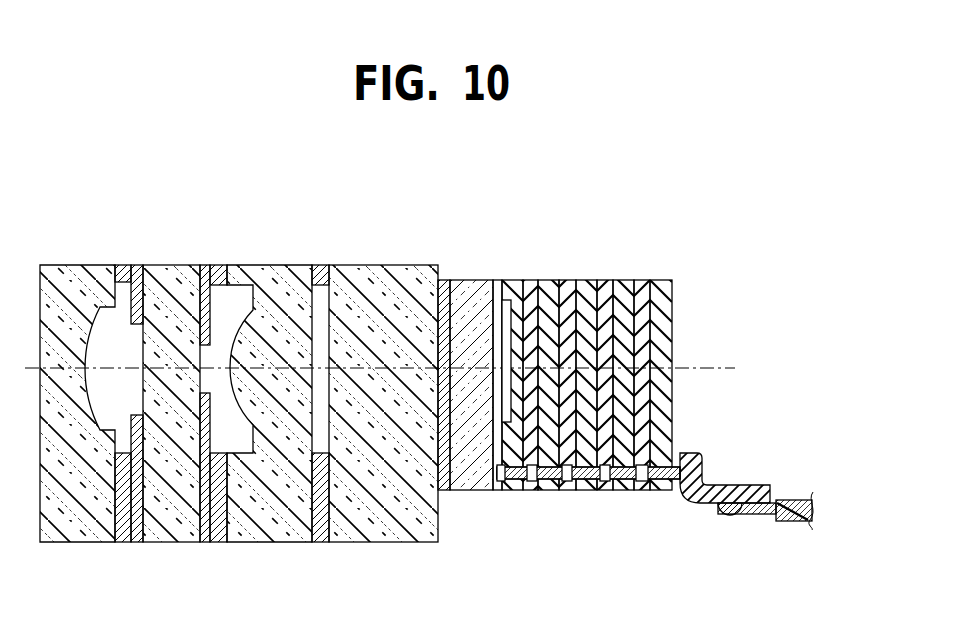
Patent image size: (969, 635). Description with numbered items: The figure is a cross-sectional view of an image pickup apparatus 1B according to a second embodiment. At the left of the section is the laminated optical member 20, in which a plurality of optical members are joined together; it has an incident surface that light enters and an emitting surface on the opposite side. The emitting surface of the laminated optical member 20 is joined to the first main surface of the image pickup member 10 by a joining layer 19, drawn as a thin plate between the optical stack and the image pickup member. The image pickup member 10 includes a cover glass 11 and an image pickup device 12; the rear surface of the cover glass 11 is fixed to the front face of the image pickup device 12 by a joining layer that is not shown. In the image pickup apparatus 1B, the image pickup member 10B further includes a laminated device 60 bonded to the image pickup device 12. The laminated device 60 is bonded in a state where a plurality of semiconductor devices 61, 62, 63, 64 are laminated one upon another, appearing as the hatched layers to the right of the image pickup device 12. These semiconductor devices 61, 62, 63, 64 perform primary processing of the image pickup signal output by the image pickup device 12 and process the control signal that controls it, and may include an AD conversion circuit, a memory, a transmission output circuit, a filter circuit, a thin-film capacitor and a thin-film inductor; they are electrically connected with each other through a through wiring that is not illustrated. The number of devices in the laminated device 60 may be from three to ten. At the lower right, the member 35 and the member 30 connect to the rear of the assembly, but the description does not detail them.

The image pickup apparatus 1B is at (730, 242).
The image pickup member 10 is at (455, 229).
The image pickup member 10B is at (472, 184).
The cover glass 11 is at (472, 278).
The image pickup device 12 is at (505, 278).
The joining layer 19 is at (445, 278).
The laminated optical member 20 is at (240, 263).
The cable 30 is at (803, 522).
The flexible substrate 35 is at (734, 483).
The laminated device 60 is at (673, 229).
The semiconductor device 61 is at (547, 278).
The semiconductor device 62 is at (583, 278).
The semiconductor device 63 is at (620, 278).
The semiconductor device 64 is at (657, 278).